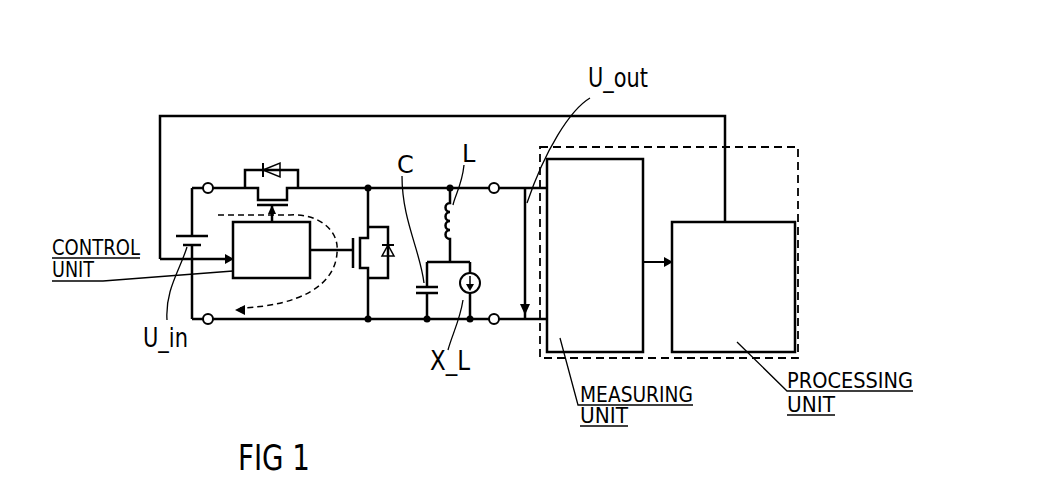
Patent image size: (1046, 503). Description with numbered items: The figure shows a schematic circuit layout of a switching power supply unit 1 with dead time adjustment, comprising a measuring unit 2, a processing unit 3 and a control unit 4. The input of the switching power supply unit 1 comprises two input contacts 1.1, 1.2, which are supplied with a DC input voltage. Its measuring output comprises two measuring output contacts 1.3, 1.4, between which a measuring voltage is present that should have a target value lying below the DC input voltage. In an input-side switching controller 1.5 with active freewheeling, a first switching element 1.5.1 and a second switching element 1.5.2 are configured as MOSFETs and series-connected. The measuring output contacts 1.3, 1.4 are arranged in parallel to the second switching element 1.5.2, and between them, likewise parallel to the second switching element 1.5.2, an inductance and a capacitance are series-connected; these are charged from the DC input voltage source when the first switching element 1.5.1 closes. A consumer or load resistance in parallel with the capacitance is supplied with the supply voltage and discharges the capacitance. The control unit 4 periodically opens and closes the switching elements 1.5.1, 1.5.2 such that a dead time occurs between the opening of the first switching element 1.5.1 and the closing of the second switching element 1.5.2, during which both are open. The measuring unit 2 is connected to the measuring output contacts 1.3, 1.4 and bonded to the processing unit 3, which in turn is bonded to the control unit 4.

The switching power supply unit 1 is at (460, 98).
The input contact 1.1 is at (209, 183).
The input contact 1.2 is at (210, 324).
The measuring output contact 1.3 is at (495, 183).
The measuring output contact 1.4 is at (494, 324).
The input-side switching controller 1.5 is at (317, 295).
The first switching element 1.5.1 is at (283, 180).
The second switching element 1.5.2 is at (370, 300).
The measuring unit 2 is at (585, 274).
The processing unit 3 is at (726, 301).
The control unit 4 is at (263, 264).